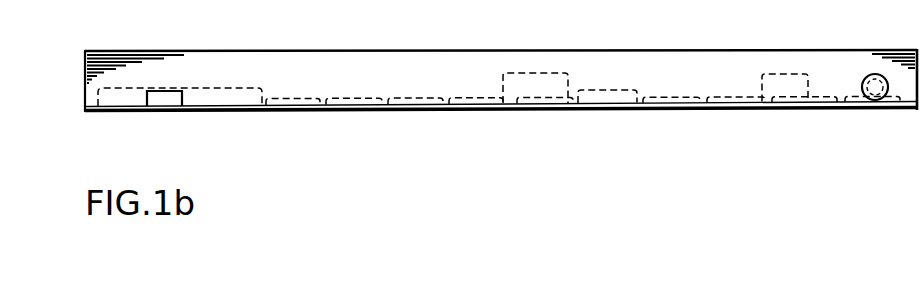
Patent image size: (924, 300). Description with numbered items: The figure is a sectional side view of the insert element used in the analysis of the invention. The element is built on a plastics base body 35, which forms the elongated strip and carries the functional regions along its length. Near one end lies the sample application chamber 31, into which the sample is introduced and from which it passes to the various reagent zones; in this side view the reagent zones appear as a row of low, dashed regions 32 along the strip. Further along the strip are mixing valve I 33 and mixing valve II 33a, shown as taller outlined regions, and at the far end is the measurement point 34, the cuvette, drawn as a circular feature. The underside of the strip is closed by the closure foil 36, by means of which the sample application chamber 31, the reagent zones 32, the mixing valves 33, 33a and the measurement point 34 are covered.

The sample application chamber 31 is at (170, 100).
The contact pads 32 is at (323, 103).
The mixing valve I 33 is at (528, 83).
The mixing valve II 33a is at (782, 86).
The measurement point (cuvette) 34 is at (877, 100).
The plastics base body 35 is at (260, 72).
The closure foil 36 is at (405, 102).